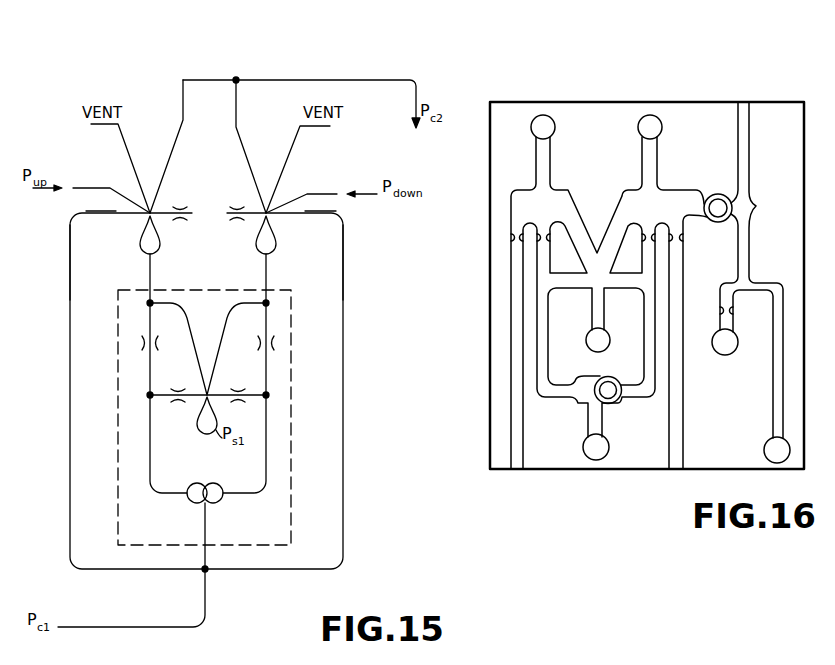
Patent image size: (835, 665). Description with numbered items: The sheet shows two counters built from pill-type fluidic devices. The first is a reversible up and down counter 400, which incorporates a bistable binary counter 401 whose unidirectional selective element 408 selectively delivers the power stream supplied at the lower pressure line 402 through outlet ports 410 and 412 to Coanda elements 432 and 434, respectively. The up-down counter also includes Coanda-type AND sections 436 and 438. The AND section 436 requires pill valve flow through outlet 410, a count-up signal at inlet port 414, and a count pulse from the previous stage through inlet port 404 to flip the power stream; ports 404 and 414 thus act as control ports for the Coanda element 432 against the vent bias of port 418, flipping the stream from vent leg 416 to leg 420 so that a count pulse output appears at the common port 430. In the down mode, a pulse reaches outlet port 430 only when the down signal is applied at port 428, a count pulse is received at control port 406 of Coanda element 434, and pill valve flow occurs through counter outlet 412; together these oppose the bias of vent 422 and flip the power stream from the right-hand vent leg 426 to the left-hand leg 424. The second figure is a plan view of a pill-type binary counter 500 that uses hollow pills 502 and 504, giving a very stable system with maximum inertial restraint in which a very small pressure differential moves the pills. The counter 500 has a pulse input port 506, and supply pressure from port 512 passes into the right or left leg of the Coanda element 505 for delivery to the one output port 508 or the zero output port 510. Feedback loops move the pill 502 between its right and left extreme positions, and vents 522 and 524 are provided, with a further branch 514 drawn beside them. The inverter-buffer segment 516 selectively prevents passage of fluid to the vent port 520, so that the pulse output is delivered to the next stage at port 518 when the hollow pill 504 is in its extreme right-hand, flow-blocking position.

In FIG. 15, the up and down counter 400 is at (348, 462).
In FIG. 15, the binary counter 401 is at (291, 523).
In FIG. 15, the control pressure line Pc1 402 is at (66, 626).
In FIG. 15, the inlet port 404 is at (89, 217).
In FIG. 15, the control port 406 is at (290, 218).
In FIG. 15, the unidirectional selective element 408 is at (220, 512).
In FIG. 15, the outlet port 410 is at (152, 278).
In FIG. 15, the outlet port 412 is at (264, 273).
In FIG. 15, the inlet port 414 is at (105, 187).
In FIG. 15, the vent leg 416 is at (131, 150).
In FIG. 15, the vent port 418 is at (166, 210).
In FIG. 15, the leg 420 is at (171, 161).
In FIG. 15, the vent 422 is at (235, 207).
In FIG. 15, the left-hand leg 424 is at (247, 159).
In FIG. 15, the right-hand vent leg 426 is at (283, 172).
In FIG. 15, the port 428 is at (323, 193).
In FIG. 15, the common port 430 is at (241, 78).
In FIG. 15, the Coanda element 432 is at (144, 226).
In FIG. 15, the Coanda element 434 is at (272, 228).
In FIG. 15, the AND section 436 is at (102, 201).
In FIG. 15, the AND section 438 is at (321, 201).
In FIG. 16, the pill-type binary counter 500 is at (486, 358).
In FIG. 16, the hollow pill 502 is at (608, 377).
In FIG. 16, the hollow pill 504 is at (732, 214).
In FIG. 16, the Coanda element 505 is at (597, 266).
In FIG. 16, the pulse input port 506 is at (596, 460).
In FIG. 16, the "1" output port 508 is at (554, 131).
In FIG. 16, the "0" output port 510 is at (661, 131).
In FIG. 16, the supply pressure port 512 is at (590, 350).
In FIG. 16, the port 514 is at (722, 355).
In FIG. 16, the inverter-buffer segment 516 is at (756, 190).
In FIG. 16, the output port 518 is at (764, 449).
In FIG. 16, the vent port 520 is at (750, 128).
In FIG. 16, the vent 522 is at (513, 470).
In FIG. 16, the vent 524 is at (674, 469).